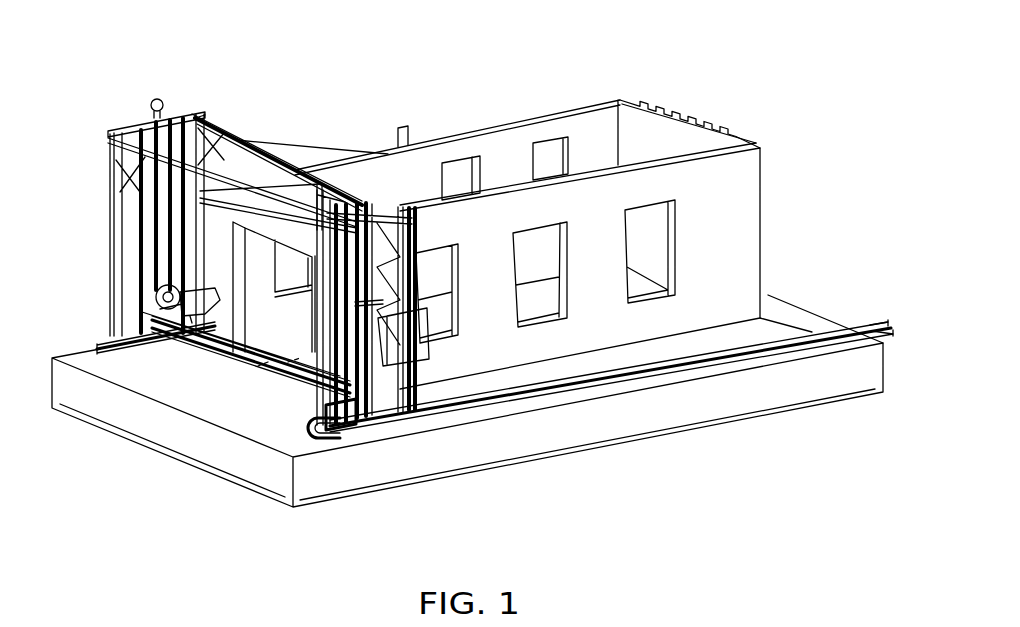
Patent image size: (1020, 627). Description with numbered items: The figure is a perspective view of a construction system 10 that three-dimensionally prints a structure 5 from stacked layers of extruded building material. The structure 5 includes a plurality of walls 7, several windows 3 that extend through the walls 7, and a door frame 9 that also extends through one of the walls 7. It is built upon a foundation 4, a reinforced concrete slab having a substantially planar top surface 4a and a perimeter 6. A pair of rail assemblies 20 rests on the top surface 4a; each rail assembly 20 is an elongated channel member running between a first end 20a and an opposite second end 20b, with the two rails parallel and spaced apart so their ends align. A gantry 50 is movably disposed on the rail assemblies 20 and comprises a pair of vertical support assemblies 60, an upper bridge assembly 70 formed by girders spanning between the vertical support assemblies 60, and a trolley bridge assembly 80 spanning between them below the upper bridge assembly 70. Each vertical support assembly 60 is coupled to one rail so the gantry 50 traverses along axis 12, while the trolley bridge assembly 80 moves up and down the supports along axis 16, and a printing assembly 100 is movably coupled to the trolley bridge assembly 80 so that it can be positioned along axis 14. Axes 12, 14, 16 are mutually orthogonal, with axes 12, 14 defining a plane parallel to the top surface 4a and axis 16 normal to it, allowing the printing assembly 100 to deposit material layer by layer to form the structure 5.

The construction system 10 is at (105, 80).
The gantry 50 is at (199, 97).
The upper bridge assembly 70 is at (243, 128).
The vertical support assemblies 60 is at (103, 233).
The rail assemblies 20 is at (95, 342).
The first end 20a is at (297, 450).
The second end 20b is at (888, 310).
The axis 16 is at (300, 352).
The door frame 9 is at (237, 345).
The axis 12 is at (263, 370).
The axis 14 is at (294, 365).
The printing assembly 100 is at (173, 340).
The trolley bridge assembly 80 is at (246, 411).
The perimeter 6 is at (170, 440).
The foundation 4 is at (828, 406).
The top surface 4a is at (803, 318).
The structure 5 is at (763, 165).
The windows 3 is at (467, 149).
The walls 7 is at (590, 126).